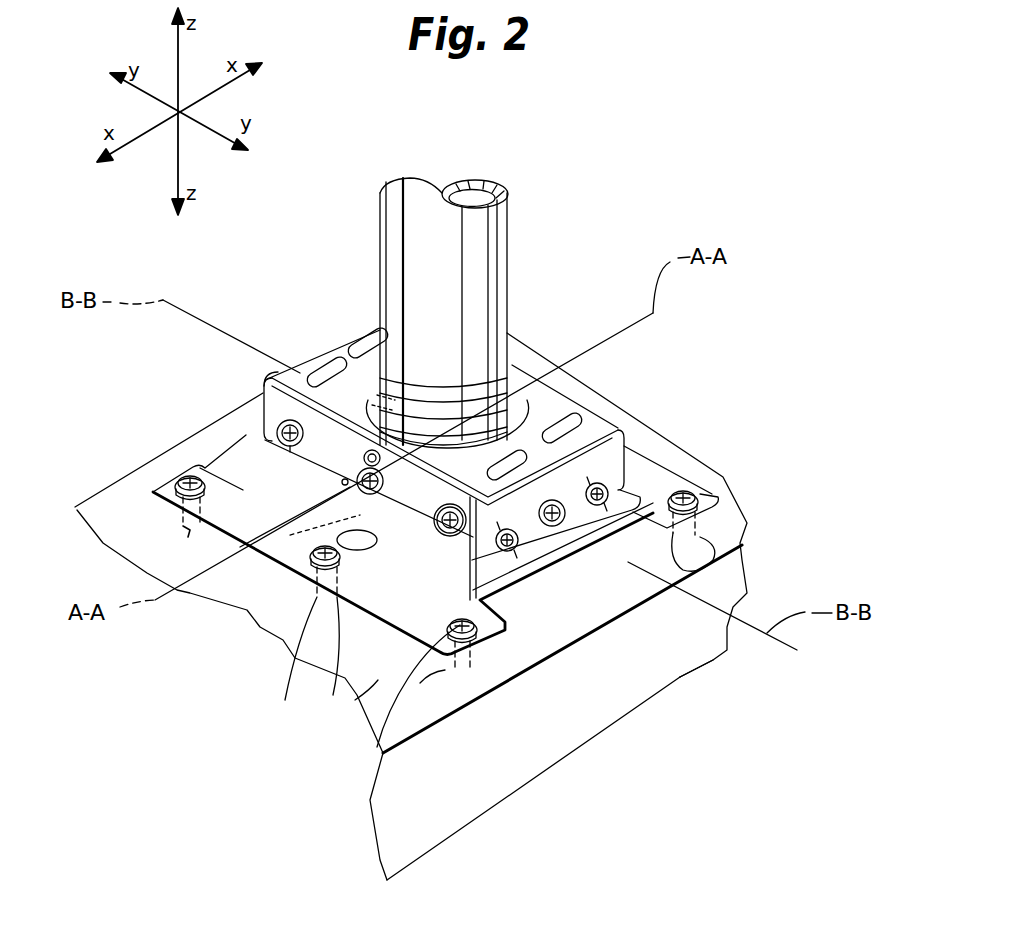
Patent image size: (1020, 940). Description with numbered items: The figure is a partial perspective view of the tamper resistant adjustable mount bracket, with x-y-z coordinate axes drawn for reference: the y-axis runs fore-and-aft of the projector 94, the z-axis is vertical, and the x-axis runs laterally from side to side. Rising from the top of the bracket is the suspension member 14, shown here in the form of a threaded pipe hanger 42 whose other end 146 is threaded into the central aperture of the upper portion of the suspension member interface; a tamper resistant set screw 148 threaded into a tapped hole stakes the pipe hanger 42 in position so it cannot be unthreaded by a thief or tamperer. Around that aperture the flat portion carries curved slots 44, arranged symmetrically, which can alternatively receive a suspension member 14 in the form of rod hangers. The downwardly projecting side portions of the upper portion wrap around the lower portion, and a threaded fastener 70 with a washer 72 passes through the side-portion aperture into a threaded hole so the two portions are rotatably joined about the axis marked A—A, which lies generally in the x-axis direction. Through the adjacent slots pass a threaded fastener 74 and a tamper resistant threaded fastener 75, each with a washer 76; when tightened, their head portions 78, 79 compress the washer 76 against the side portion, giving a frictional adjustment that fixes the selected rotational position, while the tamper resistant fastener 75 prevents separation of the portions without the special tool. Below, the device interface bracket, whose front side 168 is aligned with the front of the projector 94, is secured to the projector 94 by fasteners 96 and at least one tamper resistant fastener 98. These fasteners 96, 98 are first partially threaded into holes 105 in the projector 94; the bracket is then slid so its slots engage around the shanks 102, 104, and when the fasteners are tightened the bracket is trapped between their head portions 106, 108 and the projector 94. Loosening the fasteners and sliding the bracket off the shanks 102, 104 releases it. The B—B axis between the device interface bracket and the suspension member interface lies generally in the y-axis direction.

The suspension member 14 is at (507, 227).
The threaded pipe hanger 42 is at (493, 255).
The curved slots 44 is at (377, 337).
The threaded fastener 70 is at (342, 483).
The washer 72 is at (388, 498).
The threaded fastener 74 is at (265, 462).
The tamper resistant threaded fastener 75 is at (470, 545).
The washer 76 is at (280, 428).
The head portion 78 is at (272, 441).
The head portion 79 is at (445, 530).
The projector 94 is at (680, 678).
The fasteners 96 is at (700, 500).
The tamper resistant fastener 98 is at (460, 672).
The shank 102 is at (697, 575).
The shank 104 is at (383, 750).
The holes 105 is at (700, 537).
The head portions 106 is at (688, 493).
The head portion 108 is at (357, 700).
The other end 146 is at (390, 355).
The tamper resistant set screw 148 is at (268, 386).
The front side 168 is at (190, 530).